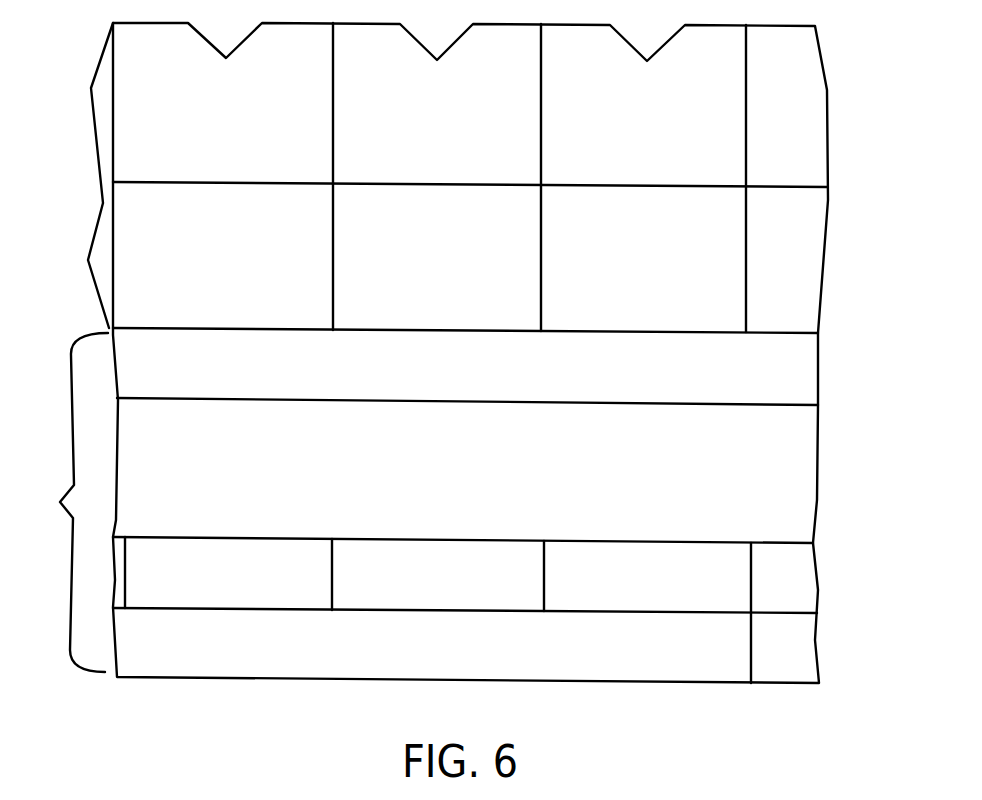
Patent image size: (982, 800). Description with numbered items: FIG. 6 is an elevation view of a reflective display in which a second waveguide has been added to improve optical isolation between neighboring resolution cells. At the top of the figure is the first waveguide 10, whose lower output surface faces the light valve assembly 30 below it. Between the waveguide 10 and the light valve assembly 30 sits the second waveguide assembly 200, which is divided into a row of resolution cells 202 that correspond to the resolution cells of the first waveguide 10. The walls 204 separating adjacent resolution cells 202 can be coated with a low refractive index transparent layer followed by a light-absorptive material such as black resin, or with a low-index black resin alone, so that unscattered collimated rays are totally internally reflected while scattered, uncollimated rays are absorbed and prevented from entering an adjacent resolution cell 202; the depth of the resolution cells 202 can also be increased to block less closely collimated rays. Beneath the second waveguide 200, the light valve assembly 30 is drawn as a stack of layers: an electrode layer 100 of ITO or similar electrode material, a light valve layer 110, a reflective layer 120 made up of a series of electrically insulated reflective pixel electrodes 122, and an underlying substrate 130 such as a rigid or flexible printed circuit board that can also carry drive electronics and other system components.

The waveguide 10 is at (805, 137).
The light valve assembly 30 is at (69, 502).
The electrode layer 100 is at (792, 370).
The light valve layer 110 is at (795, 475).
The reflective layer 120 is at (790, 572).
The reflective pixel electrode 122 is at (205, 582).
The substrate 130 is at (807, 643).
The second waveguide assembly 200 is at (798, 287).
The resolution cell 202 is at (717, 243).
The wall 204 is at (743, 285).